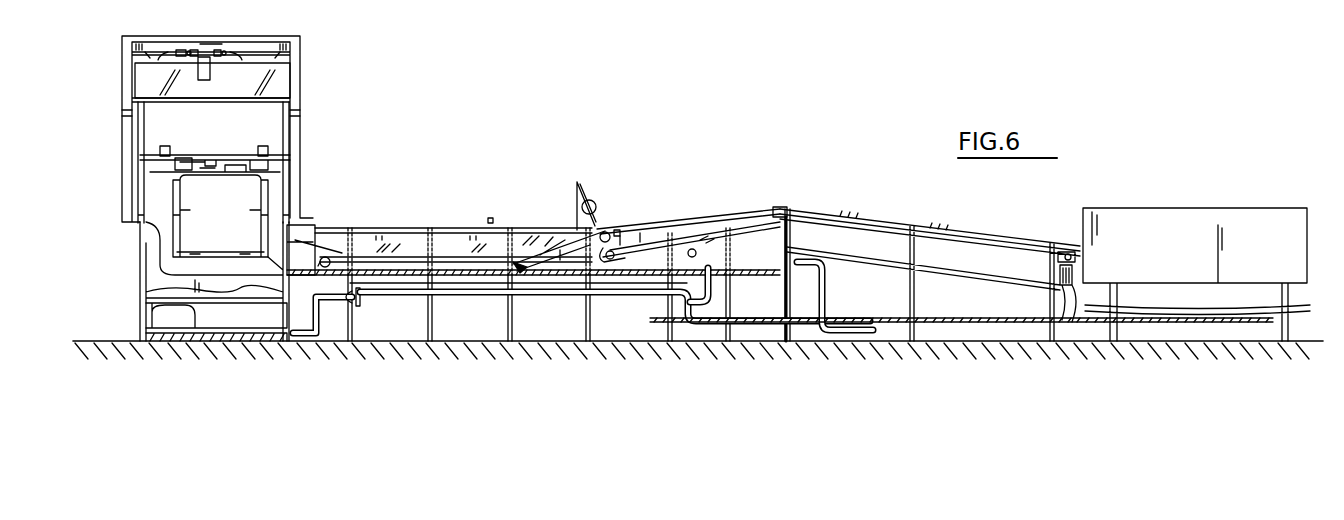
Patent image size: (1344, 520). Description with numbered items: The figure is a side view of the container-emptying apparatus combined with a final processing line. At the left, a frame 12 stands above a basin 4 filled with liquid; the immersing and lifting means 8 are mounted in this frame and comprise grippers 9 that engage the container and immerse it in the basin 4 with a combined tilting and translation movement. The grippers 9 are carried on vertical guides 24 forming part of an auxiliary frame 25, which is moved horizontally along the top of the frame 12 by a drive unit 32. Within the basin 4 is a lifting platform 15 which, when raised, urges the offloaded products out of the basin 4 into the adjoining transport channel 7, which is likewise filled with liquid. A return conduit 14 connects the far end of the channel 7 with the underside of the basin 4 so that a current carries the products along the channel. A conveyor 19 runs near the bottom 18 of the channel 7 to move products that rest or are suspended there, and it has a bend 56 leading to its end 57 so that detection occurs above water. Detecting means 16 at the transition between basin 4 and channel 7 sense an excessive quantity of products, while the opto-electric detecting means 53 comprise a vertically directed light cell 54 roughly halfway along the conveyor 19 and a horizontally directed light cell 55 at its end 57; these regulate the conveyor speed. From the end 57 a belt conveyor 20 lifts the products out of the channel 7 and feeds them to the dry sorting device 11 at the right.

The basin 4 is at (173, 277).
The transport channel 7 is at (452, 231).
The immersing and lifting means 8 is at (293, 180).
The grippers 9 is at (268, 194).
The sorting device 11 is at (1271, 204).
The frame 12 is at (300, 86).
The return conduit 14 is at (320, 318).
The lifting platform 15 is at (157, 310).
The detecting means 16 is at (331, 218).
The bottom of channel 18 is at (413, 266).
The conveyor 19 is at (553, 236).
The belt conveyor 20 is at (860, 212).
The vertical guides 24 is at (140, 137).
The auxiliary frame 25 is at (187, 83).
The drive unit 32 is at (215, 62).
The detecting means 53 is at (585, 170).
The light cell 54 is at (491, 218).
The light cell 55 is at (622, 228).
The bend 56 is at (523, 272).
The end of conveyor 57 is at (612, 226).